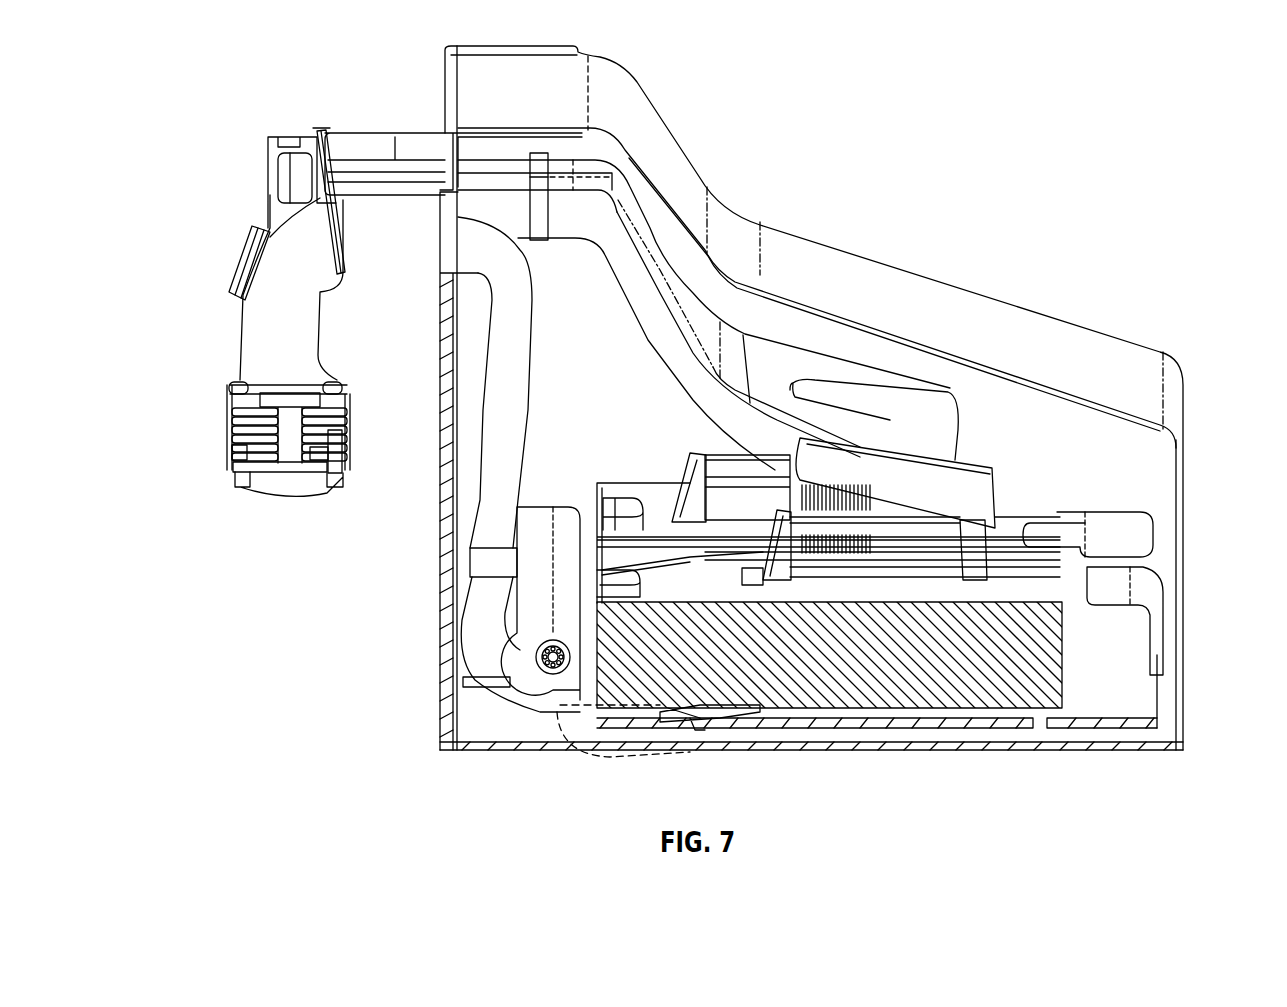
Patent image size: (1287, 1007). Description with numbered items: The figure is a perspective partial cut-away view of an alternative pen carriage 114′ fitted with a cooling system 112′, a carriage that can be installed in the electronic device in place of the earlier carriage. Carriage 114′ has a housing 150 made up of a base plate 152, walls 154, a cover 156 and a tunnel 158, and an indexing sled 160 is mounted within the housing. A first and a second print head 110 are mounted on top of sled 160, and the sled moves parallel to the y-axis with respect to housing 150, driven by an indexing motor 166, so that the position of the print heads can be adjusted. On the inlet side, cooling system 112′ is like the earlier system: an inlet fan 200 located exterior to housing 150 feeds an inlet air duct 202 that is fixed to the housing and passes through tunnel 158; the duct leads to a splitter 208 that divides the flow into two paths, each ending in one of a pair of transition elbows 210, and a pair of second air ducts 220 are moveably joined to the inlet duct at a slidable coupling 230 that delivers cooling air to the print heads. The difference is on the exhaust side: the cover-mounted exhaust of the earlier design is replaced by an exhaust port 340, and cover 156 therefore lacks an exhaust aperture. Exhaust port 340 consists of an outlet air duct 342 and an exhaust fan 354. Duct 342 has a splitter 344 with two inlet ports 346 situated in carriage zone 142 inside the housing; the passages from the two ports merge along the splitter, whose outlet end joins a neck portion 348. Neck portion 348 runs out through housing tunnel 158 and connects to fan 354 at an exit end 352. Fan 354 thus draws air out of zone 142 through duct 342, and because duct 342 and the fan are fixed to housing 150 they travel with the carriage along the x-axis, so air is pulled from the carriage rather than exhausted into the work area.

The cooling system 112′ is at (256, 126).
The pen carriage 114′ is at (321, 126).
The exit end 352 is at (322, 138).
The tunnel 158 is at (372, 133).
The neck portion 348 is at (400, 163).
The exhaust port 340 is at (262, 161).
The exhaust fan 354 is at (280, 190).
The inlet air duct 202 is at (322, 320).
The housing 150 is at (446, 386).
The walls 154 is at (446, 425).
The splitter 208 is at (512, 428).
The inlet fan 200 is at (227, 462).
The outlet air duct 342 is at (648, 237).
The splitter 344 is at (770, 357).
The cover 156 is at (1045, 333).
The carriage zone 142 is at (960, 364).
The inlet ports 346 is at (960, 419).
The print head 110 is at (1010, 528).
The transition elbows 210 is at (475, 650).
The indexing motor 166 is at (535, 657).
The slidable coupling 230 is at (598, 766).
The second air duct 220 is at (748, 720).
The indexing sled 160 is at (836, 728).
The base plate 152 is at (1030, 750).